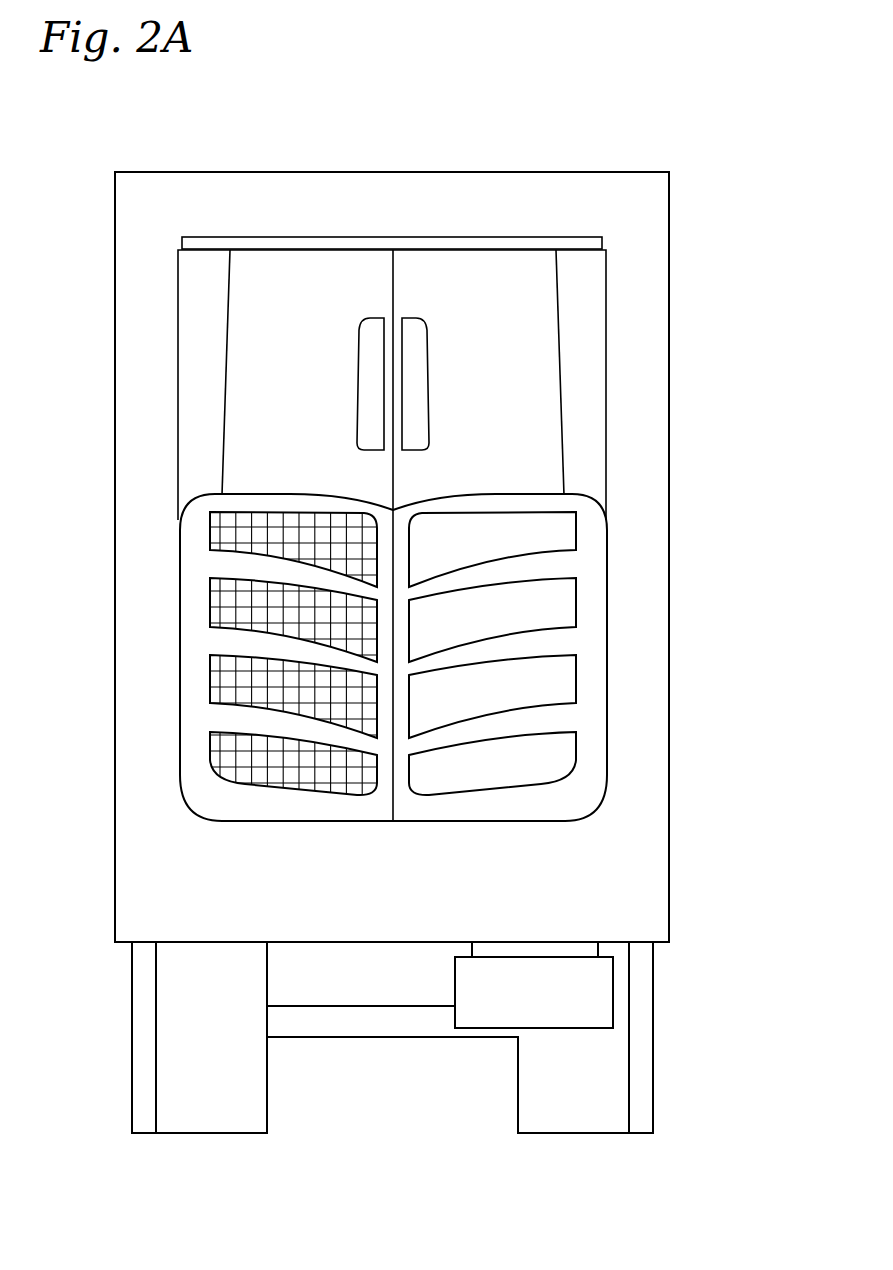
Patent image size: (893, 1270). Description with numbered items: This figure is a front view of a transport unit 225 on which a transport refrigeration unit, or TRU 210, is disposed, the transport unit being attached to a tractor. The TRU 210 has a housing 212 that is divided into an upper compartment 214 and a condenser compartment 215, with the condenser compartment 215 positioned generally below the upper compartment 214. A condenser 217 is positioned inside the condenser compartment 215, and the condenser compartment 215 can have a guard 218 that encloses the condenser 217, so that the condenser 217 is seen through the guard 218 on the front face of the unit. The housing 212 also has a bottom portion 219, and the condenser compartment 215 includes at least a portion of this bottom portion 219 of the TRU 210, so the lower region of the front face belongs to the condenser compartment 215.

The transport unit 225 is at (520, 172).
The TRU 210 is at (606, 295).
The housing 212 is at (207, 344).
The upper compartment 214 is at (535, 386).
The condenser compartment 215 is at (607, 575).
The condenser 217 is at (543, 677).
The guard 218 is at (527, 735).
The bottom portion 219 is at (522, 822).